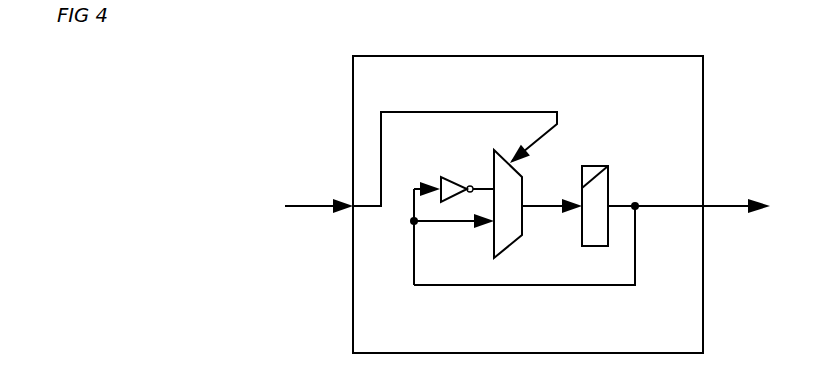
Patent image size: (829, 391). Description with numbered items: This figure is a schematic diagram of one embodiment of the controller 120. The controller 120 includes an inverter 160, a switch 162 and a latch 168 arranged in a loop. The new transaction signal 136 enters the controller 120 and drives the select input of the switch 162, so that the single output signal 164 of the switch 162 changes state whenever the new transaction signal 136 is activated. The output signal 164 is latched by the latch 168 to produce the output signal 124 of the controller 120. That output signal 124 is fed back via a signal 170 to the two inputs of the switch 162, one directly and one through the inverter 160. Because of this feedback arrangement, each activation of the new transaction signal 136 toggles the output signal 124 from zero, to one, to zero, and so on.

The controller 120 is at (528, 204).
The new transaction signal 136 is at (313, 204).
The inverter 160 is at (448, 175).
The switch 162 is at (513, 248).
The output signal 164 is at (540, 192).
The latch 168 is at (600, 163).
The signal 170 is at (468, 287).
The output signal 124 is at (717, 205).